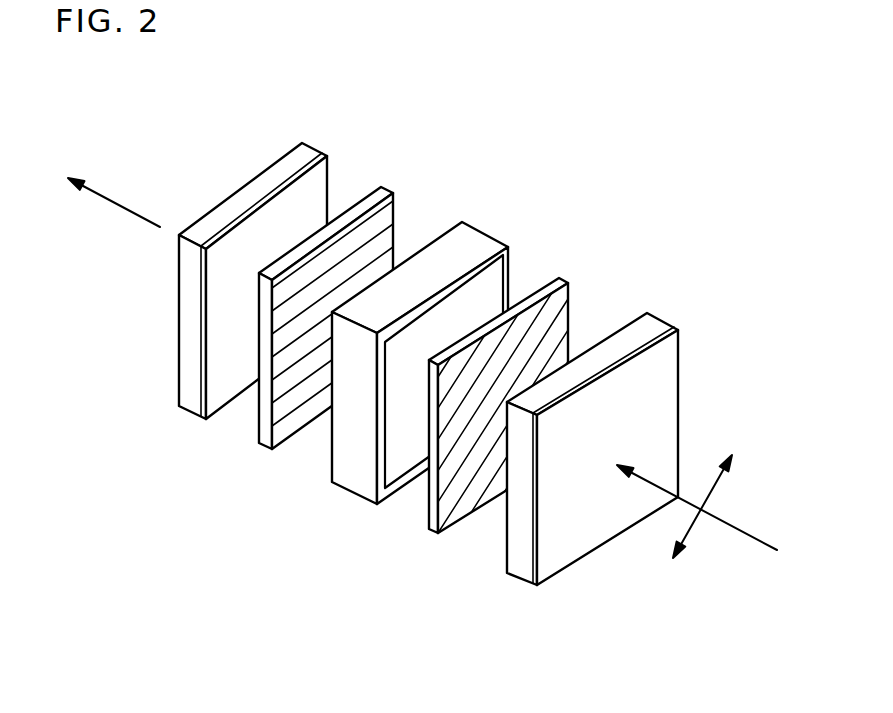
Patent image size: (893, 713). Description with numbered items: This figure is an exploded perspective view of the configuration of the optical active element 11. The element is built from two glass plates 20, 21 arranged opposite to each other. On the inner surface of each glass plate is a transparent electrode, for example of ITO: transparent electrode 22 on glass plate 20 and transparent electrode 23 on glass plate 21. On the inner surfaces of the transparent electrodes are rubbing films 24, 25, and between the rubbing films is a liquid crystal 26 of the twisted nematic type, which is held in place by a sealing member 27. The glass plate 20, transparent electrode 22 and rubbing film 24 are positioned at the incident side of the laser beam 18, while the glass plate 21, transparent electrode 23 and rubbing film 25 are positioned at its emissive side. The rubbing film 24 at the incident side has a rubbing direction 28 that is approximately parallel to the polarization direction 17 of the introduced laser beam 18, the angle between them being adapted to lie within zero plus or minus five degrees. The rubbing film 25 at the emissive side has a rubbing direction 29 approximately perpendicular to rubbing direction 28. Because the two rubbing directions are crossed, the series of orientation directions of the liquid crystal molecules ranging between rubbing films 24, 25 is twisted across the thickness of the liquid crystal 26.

The optical active element 11 is at (466, 364).
The polarization direction 17 is at (695, 527).
The laser beam 18 is at (732, 520).
The glass plate 20 is at (658, 330).
The glass plate 21 is at (308, 147).
The transparent electrode 22 is at (618, 325).
The transparent electrode 23 is at (318, 183).
The rubbing film 24 is at (562, 280).
The rubbing film 25 is at (387, 187).
The liquid crystal 26 is at (513, 267).
The sealing member 27 is at (437, 248).
The rubbing direction 28 is at (462, 492).
The rubbing direction 29 is at (292, 400).